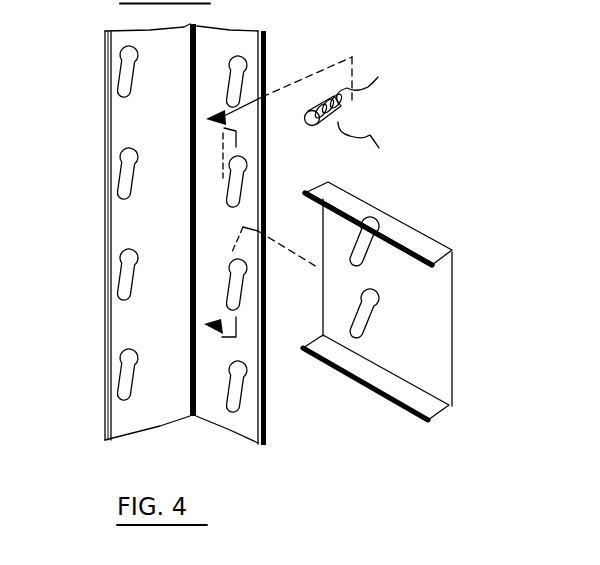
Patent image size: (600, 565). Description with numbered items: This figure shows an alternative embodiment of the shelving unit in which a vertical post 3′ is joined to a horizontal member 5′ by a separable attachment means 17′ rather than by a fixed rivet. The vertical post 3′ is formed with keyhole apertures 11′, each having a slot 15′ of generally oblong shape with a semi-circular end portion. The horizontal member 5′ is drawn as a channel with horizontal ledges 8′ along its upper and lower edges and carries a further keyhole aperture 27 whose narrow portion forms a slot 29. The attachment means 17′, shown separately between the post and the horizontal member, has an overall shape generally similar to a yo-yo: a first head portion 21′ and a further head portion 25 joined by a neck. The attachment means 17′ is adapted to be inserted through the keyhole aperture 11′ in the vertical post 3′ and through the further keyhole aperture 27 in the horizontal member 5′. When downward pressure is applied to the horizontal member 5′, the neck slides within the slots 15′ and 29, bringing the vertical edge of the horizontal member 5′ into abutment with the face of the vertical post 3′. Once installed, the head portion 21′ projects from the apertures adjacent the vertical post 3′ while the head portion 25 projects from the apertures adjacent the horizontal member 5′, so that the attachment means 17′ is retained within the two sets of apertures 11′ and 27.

The vertical post 3′ is at (128, 117).
The keyhole aperture 11′ is at (119, 159).
The slot 15′ is at (129, 192).
The further head portion 25 is at (315, 125).
The first head portion 21′ is at (374, 84).
The attachment means 17′ is at (376, 146).
The horizontal member 5′ is at (410, 316).
The horizontal ledge 8′ is at (412, 241).
The slot 29 is at (359, 300).
The further keyhole aperture 27 is at (381, 343).